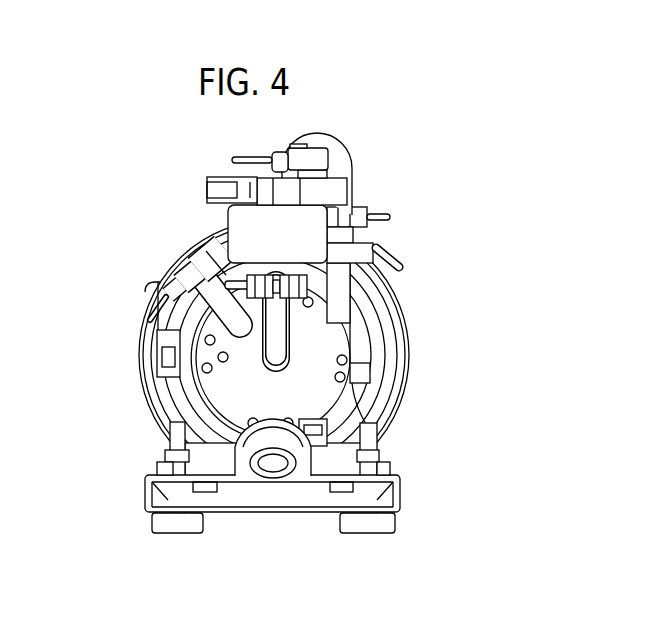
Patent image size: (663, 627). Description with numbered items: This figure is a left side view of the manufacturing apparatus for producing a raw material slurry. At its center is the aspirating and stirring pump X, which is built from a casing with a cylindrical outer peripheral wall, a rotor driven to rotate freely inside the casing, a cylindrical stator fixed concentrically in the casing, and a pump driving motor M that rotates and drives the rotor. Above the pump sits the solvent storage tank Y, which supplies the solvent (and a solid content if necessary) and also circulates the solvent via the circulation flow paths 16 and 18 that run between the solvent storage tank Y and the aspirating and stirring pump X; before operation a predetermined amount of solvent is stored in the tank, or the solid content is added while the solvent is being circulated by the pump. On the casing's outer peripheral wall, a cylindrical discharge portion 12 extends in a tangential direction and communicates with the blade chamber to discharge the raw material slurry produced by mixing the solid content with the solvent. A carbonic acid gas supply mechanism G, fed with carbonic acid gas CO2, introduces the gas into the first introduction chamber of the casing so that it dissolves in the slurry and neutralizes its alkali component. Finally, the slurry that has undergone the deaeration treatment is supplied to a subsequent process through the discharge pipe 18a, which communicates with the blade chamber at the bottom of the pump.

The circulation flow path 18 is at (340, 163).
The discharge pipe 18a is at (273, 470).
The cylindrical discharge portion 12 is at (338, 303).
The circulation flow path 16 is at (268, 345).
The solvent storage tank Y is at (240, 228).
The carbonic acid gas CO2 is at (180, 255).
The carbonic acid gas supply mechanism G is at (180, 282).
The pump driving motor M is at (385, 335).
The aspirating and stirring pump X is at (315, 393).